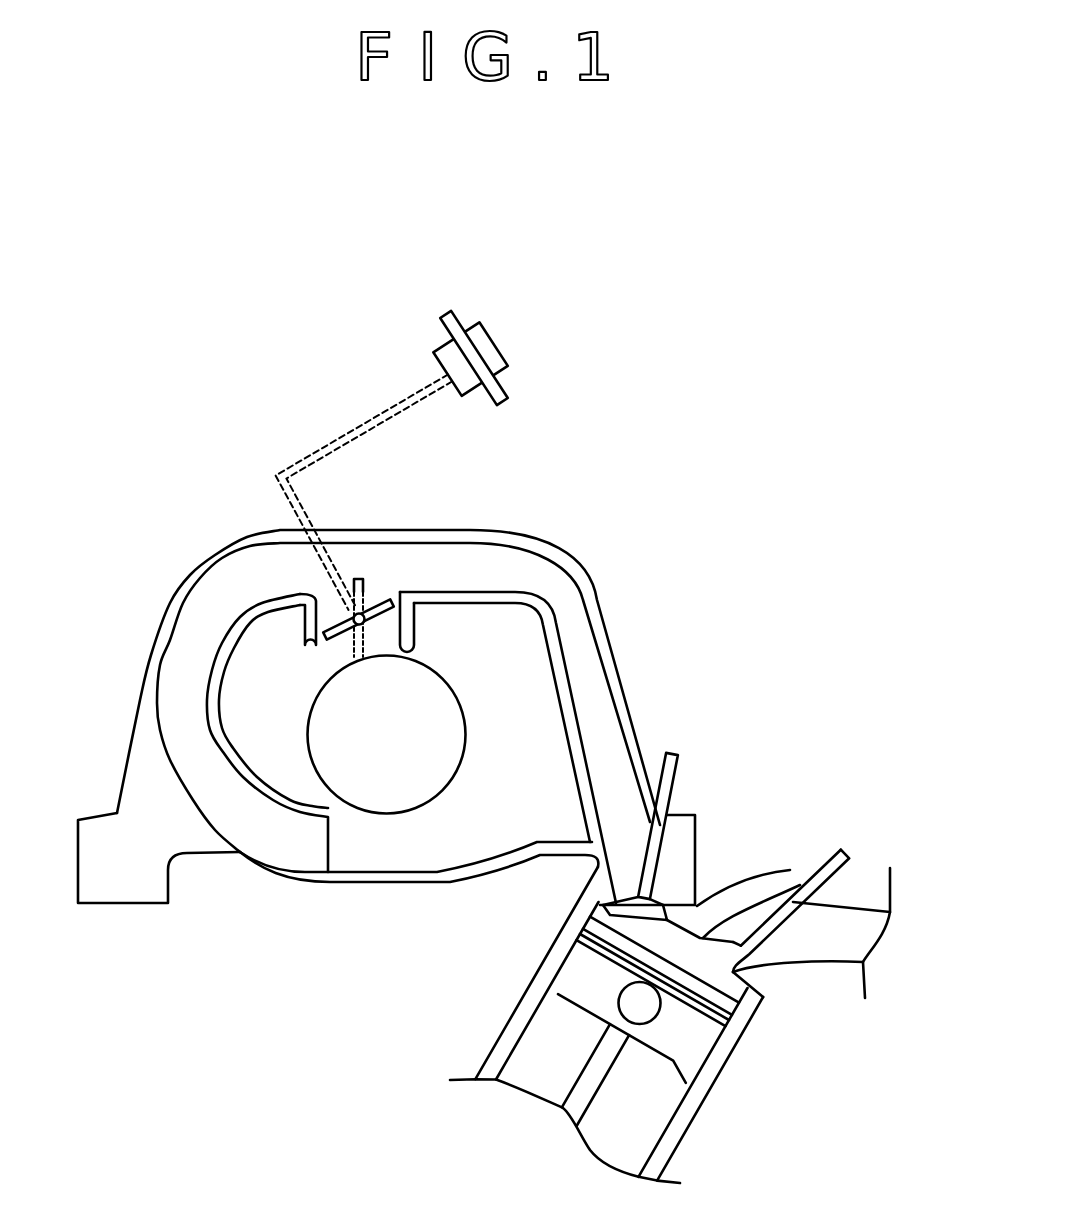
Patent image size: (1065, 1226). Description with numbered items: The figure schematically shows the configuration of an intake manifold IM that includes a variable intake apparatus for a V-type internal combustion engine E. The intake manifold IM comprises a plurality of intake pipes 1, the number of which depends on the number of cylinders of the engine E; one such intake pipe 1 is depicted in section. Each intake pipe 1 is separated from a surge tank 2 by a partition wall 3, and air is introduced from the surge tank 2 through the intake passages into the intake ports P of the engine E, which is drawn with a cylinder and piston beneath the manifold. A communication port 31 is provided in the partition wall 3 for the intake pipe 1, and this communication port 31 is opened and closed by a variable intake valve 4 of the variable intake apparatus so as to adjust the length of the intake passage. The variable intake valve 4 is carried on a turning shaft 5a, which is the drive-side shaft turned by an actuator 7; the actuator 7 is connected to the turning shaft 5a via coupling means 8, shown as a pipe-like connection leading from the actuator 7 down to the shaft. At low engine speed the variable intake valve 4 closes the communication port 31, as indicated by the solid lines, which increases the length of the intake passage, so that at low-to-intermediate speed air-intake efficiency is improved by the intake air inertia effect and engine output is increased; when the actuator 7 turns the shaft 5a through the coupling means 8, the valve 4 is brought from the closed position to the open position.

The intake pipe 1 is at (560, 562).
The surge tank 2 is at (460, 810).
The partition wall 3 is at (462, 595).
The communication port 31 is at (322, 598).
The variable intake valve 4 is at (372, 606).
The turning shaft 5a is at (368, 580).
The actuator 7 is at (487, 350).
The coupling means 8 is at (348, 432).
The intake manifold IM is at (166, 590).
The intake port P is at (660, 893).
The V-type internal combustion engine E is at (727, 1068).